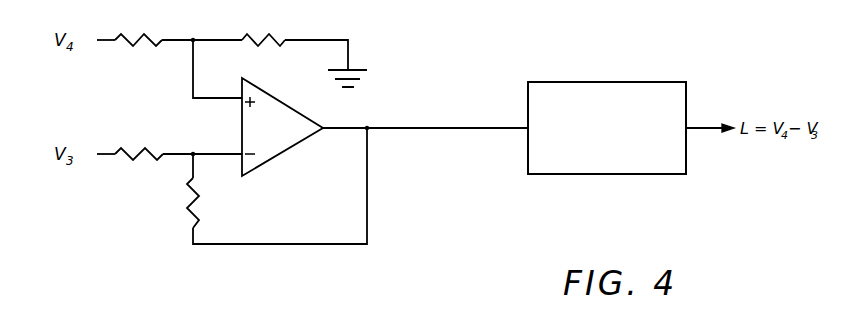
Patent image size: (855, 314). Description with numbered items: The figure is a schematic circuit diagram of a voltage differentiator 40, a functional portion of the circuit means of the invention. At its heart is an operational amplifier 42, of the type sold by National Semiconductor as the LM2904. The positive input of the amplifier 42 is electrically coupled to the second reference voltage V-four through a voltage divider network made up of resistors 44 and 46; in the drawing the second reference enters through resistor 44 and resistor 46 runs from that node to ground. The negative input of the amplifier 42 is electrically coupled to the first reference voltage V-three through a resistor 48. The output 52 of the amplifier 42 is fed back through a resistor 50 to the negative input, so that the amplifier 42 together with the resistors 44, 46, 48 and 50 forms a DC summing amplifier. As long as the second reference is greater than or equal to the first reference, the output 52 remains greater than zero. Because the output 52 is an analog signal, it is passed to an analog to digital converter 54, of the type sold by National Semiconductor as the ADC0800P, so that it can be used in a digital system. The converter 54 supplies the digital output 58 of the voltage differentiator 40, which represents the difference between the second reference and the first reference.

The voltage differentiator 40 is at (463, 81).
The operational amplifier 42 is at (292, 104).
The resistor 44 is at (156, 37).
The resistor 46 is at (266, 34).
The resistor 48 is at (148, 128).
The resistor 50 is at (197, 218).
The output 52 is at (324, 127).
The analog to digital converter 54 is at (565, 82).
The digital output 58 is at (688, 125).